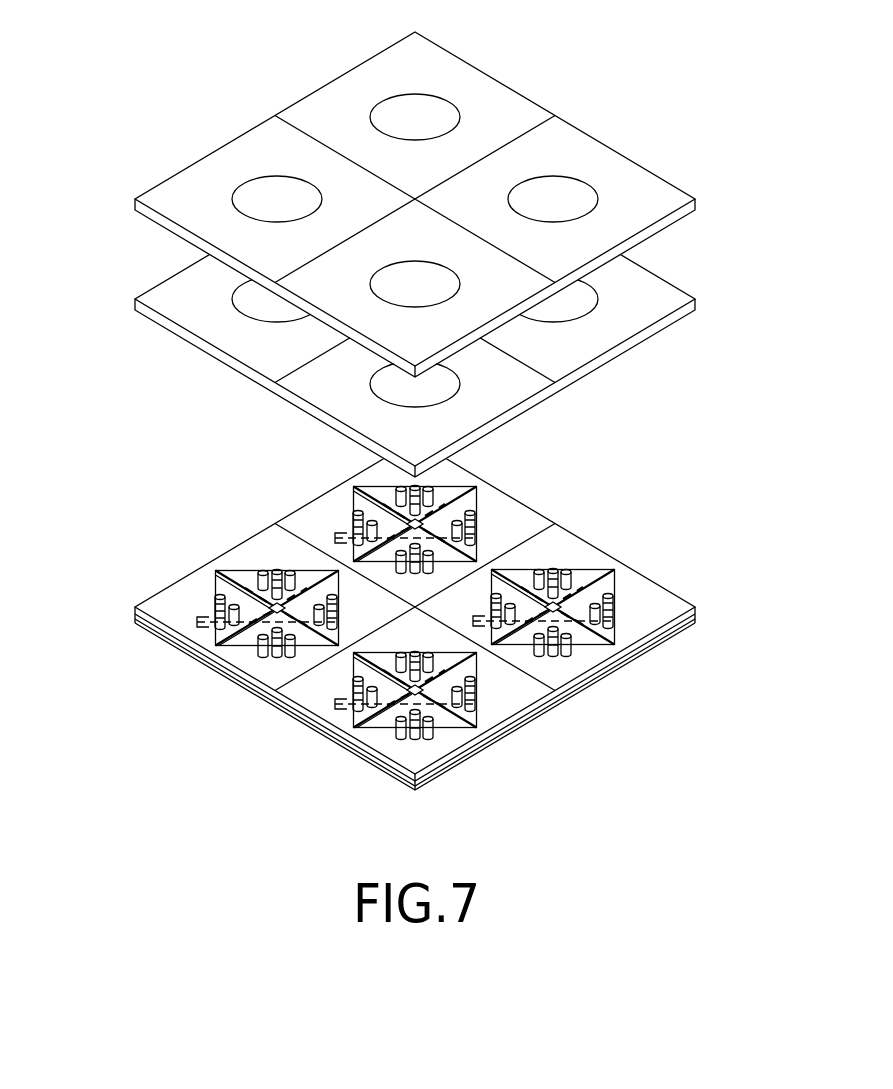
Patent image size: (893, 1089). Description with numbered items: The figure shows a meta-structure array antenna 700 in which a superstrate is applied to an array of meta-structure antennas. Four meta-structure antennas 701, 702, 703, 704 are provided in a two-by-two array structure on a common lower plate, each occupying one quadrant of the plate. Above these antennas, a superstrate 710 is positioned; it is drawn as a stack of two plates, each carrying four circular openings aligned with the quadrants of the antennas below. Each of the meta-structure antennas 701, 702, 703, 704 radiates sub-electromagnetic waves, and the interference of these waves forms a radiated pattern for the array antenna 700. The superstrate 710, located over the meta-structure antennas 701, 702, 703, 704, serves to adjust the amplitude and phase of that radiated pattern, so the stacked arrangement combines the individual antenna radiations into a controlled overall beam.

The meta-structure array antenna 700 is at (230, 40).
The superstrate 710 is at (121, 155).
The meta-structure antenna 701 is at (325, 510).
The meta-structure antenna 702 is at (255, 553).
The meta-structure antenna 703 is at (502, 703).
The meta-structure antenna 704 is at (650, 622).